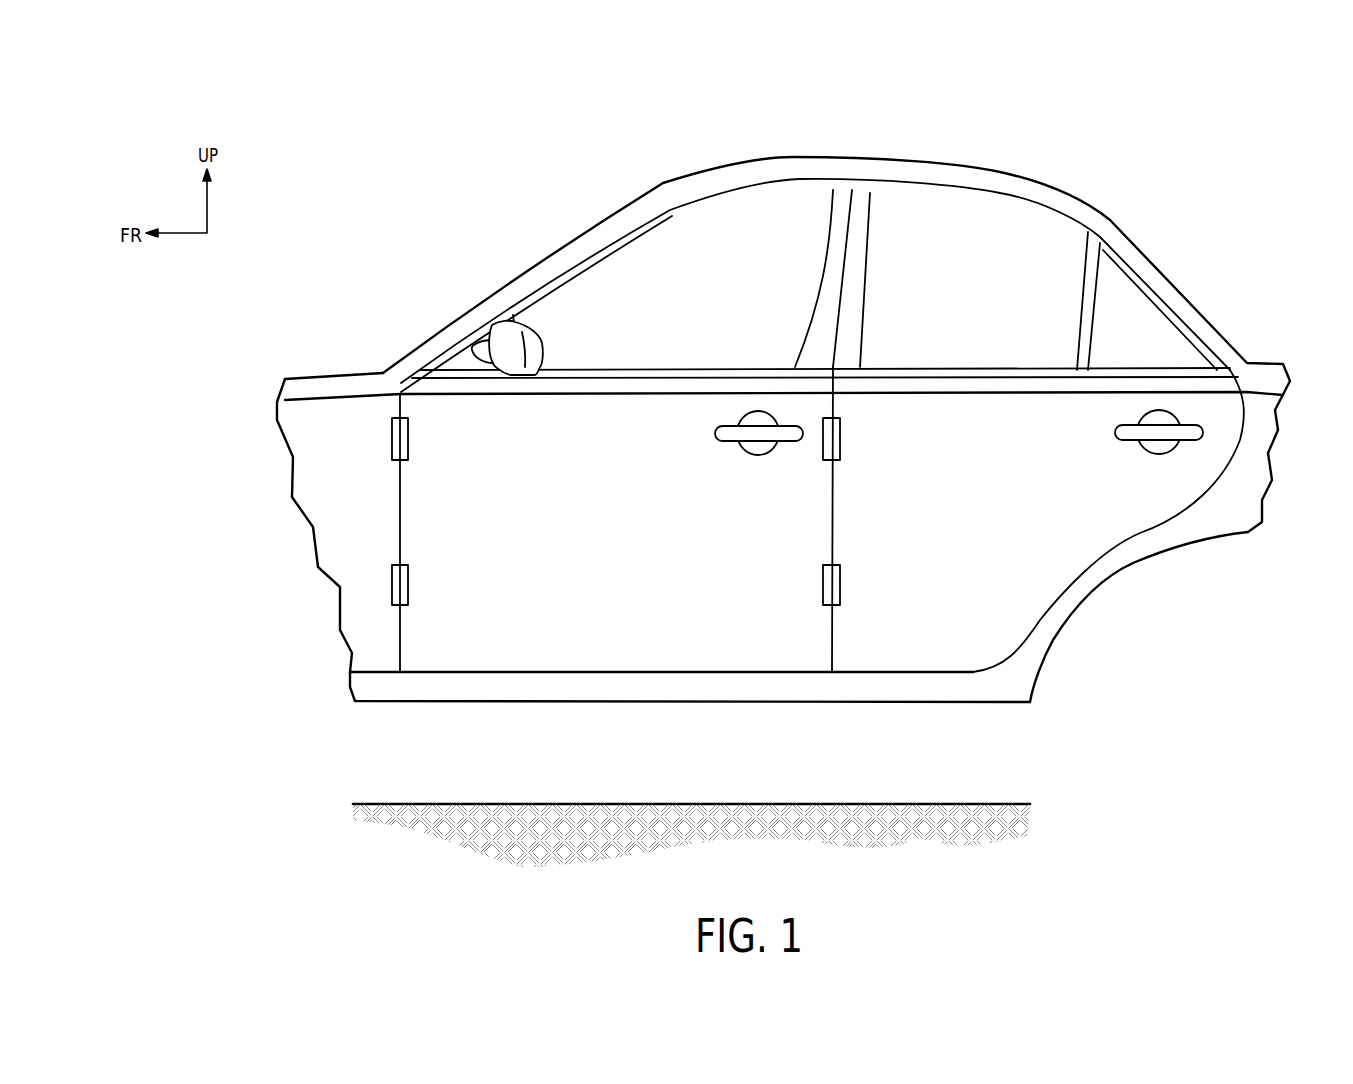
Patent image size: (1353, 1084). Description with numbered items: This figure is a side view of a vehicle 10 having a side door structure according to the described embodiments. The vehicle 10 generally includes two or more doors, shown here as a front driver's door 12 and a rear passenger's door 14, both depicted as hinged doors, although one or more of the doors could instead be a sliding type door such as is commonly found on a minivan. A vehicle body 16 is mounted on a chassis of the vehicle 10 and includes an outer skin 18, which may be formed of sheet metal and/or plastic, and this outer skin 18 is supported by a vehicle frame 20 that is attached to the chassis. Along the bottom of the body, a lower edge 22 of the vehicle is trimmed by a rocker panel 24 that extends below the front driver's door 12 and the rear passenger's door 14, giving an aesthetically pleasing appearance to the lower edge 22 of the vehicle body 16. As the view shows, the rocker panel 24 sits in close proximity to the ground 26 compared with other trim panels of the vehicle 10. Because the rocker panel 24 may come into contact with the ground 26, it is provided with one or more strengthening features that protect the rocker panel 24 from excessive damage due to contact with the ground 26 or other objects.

The vehicle 10 is at (1078, 137).
The front driver's door 12 is at (508, 638).
The rear passenger's door 14 is at (1040, 578).
The vehicle body 16 is at (1206, 268).
The outer skin 18 is at (901, 424).
The vehicle frame 20 is at (840, 288).
The lower edge 22 is at (932, 673).
The rocker panel 24 is at (790, 709).
The ground 26 is at (597, 803).